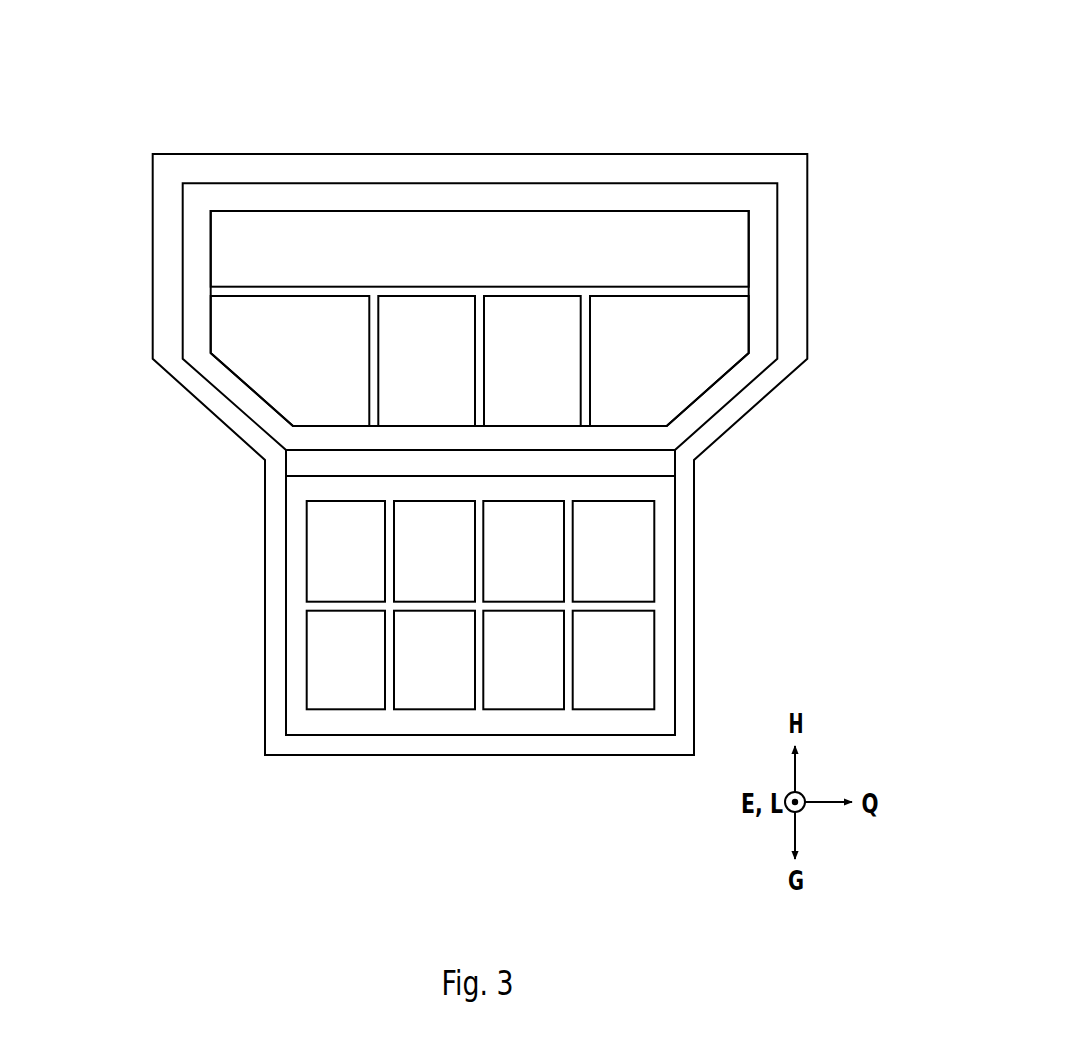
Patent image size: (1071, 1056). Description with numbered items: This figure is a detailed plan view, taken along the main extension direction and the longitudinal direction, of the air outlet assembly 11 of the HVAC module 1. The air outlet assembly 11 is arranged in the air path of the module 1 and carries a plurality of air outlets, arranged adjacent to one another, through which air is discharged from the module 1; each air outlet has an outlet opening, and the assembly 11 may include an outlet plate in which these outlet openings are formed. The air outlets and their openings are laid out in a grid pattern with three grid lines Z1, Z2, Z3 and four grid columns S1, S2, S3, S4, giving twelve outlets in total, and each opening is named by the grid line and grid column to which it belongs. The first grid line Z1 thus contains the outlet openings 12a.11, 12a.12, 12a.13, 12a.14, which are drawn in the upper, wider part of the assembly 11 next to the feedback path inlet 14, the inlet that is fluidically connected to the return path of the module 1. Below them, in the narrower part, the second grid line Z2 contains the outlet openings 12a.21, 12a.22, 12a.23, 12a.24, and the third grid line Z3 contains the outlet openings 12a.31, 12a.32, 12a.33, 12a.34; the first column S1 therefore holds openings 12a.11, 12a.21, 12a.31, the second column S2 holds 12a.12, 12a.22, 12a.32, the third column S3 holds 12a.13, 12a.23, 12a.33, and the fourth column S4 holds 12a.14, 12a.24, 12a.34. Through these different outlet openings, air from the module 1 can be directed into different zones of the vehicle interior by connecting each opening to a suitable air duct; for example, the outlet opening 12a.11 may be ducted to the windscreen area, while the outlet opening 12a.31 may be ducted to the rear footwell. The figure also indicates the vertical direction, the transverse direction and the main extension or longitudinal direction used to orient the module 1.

The HVAC module 1 is at (858, 161).
The air outlet assembly 11 is at (836, 315).
The feedback path inlet 14 is at (466, 255).
The outlet opening 12a.11 is at (616, 368).
The outlet opening 12a.12 is at (496, 368).
The outlet opening 12a.13 is at (390, 368).
The outlet opening 12a.14 is at (266, 368).
The outlet opening 12a.21 is at (578, 564).
The outlet opening 12a.22 is at (490, 564).
The outlet opening 12a.23 is at (400, 564).
The outlet opening 12a.24 is at (312, 564).
The outlet opening 12a.31 is at (578, 672).
The outlet opening 12a.32 is at (490, 672).
The outlet opening 12a.33 is at (400, 672).
The outlet opening 12a.34 is at (312, 672).
The first grid line Z1 is at (391, 318).
The second grid line Z2 is at (399, 551).
The third grid line Z3 is at (399, 660).
The first grid column S1 is at (621, 781).
The second grid column S2 is at (526, 781).
The third grid column S3 is at (432, 781).
The fourth grid column S4 is at (338, 781).